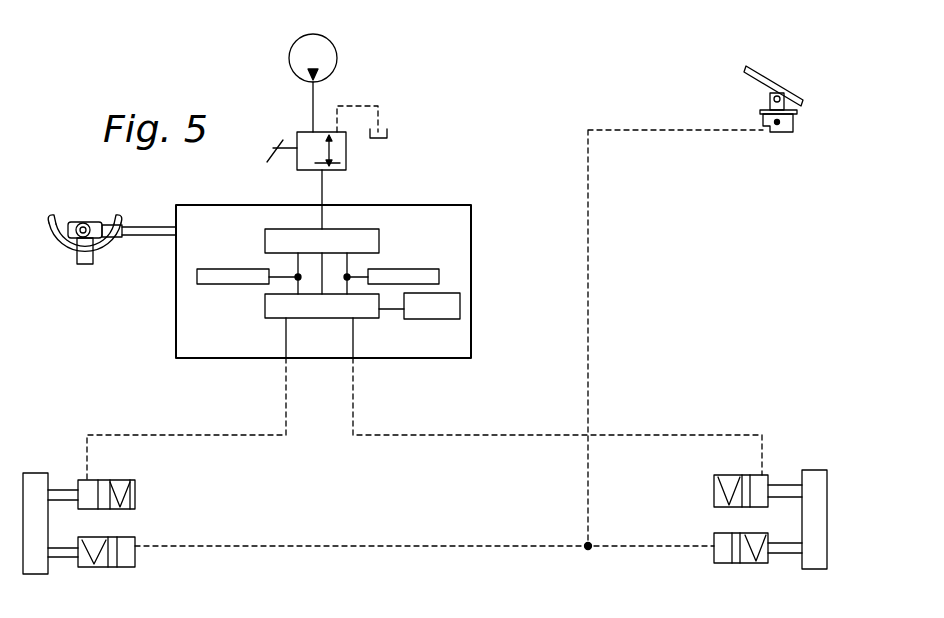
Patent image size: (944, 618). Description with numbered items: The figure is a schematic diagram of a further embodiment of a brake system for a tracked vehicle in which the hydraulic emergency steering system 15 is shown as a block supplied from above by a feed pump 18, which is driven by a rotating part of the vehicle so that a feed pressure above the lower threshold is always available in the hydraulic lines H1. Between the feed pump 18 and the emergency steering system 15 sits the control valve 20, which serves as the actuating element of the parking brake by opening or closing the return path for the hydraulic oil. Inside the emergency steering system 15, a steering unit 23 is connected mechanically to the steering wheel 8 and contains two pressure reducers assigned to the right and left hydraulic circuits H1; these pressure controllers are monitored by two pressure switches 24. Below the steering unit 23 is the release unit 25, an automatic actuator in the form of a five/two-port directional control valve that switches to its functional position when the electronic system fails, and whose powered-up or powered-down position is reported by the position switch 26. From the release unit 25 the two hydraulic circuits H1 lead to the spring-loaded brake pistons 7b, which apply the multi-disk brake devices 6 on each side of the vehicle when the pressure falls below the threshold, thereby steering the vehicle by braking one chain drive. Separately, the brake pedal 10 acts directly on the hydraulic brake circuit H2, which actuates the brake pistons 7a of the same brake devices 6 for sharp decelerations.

The brake device 6 is at (37, 470).
The brake piston 7a is at (137, 568).
The brake piston 7b is at (135, 497).
The steering wheel 8 is at (85, 270).
The brake pedal 10 is at (748, 112).
The hydraulic emergency steering system 15 is at (484, 198).
The feed pump 18 is at (348, 57).
The control valve 20 is at (350, 165).
The steering unit 23 is at (383, 234).
The pressure switch 24 is at (213, 268).
The release unit 25 is at (368, 320).
The position switch 26 is at (450, 319).
The hydraulic circuit H1 is at (255, 438).
The hydraulic brake circuit H2 is at (377, 545).